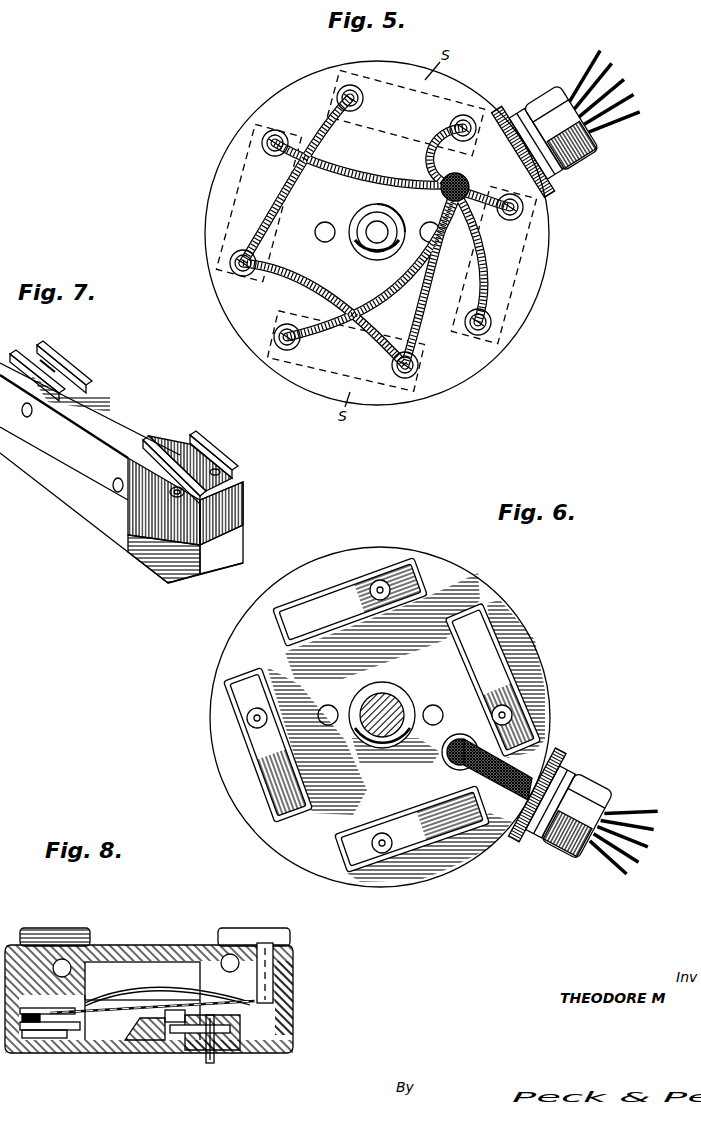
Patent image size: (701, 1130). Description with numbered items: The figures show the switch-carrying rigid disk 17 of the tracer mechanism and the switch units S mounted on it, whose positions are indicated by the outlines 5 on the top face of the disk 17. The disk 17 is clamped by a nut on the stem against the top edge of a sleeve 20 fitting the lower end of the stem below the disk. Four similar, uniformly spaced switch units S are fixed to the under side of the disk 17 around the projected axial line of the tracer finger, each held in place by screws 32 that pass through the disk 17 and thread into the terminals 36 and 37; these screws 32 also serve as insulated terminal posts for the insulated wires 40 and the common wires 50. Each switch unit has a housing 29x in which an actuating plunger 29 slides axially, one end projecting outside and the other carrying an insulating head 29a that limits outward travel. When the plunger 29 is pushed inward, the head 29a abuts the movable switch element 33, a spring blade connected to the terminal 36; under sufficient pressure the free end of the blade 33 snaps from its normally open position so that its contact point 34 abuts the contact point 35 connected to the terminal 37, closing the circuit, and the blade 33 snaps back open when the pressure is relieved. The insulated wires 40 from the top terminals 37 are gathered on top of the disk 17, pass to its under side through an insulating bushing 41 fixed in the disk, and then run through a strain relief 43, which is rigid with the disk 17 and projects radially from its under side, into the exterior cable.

In FIG. 5, the contact outline (dashed position) 5 is at (212, 200).
In FIG. 5, the switch-carrying disk 17 is at (470, 368).
In FIG. 6, the switch-carrying disk 17 is at (492, 593).
In FIG. 6, the sleeve 20 is at (370, 690).
In FIG. 6, the actuating plunger 29 is at (380, 582).
In FIG. 8, the actuating plunger 29 is at (214, 1058).
In FIG. 7, the switch housing 29x is at (240, 520).
In FIG. 6, the switch housing 29x is at (492, 660).
In FIG. 8, the switch housing 29x is at (294, 967).
In FIG. 8, the plunger head 29a is at (196, 1050).
In FIG. 5, the screws 32 is at (266, 130).
In FIG. 8, the movable switch element 33 is at (115, 1018).
In FIG. 8, the contact point 34 is at (68, 1016).
In FIG. 8, the contact point 35 is at (110, 985).
In FIG. 7, the terminal 36 is at (45, 362).
In FIG. 8, the terminal 36 is at (275, 991).
In FIG. 7, the terminal 37 is at (238, 478).
In FIG. 8, the terminal 37 is at (100, 944).
In FIG. 5, the insulated wires 40 is at (606, 96).
In FIG. 6, the insulated wires 40 is at (470, 783).
In FIG. 5, the insulating bushing 41 is at (440, 196).
In FIG. 6, the insulating bushing 41 is at (460, 738).
In FIG. 5, the strain relief 43 is at (522, 110).
In FIG. 6, the strain relief 43 is at (565, 770).
In FIG. 5, the common wires 50 is at (335, 183).